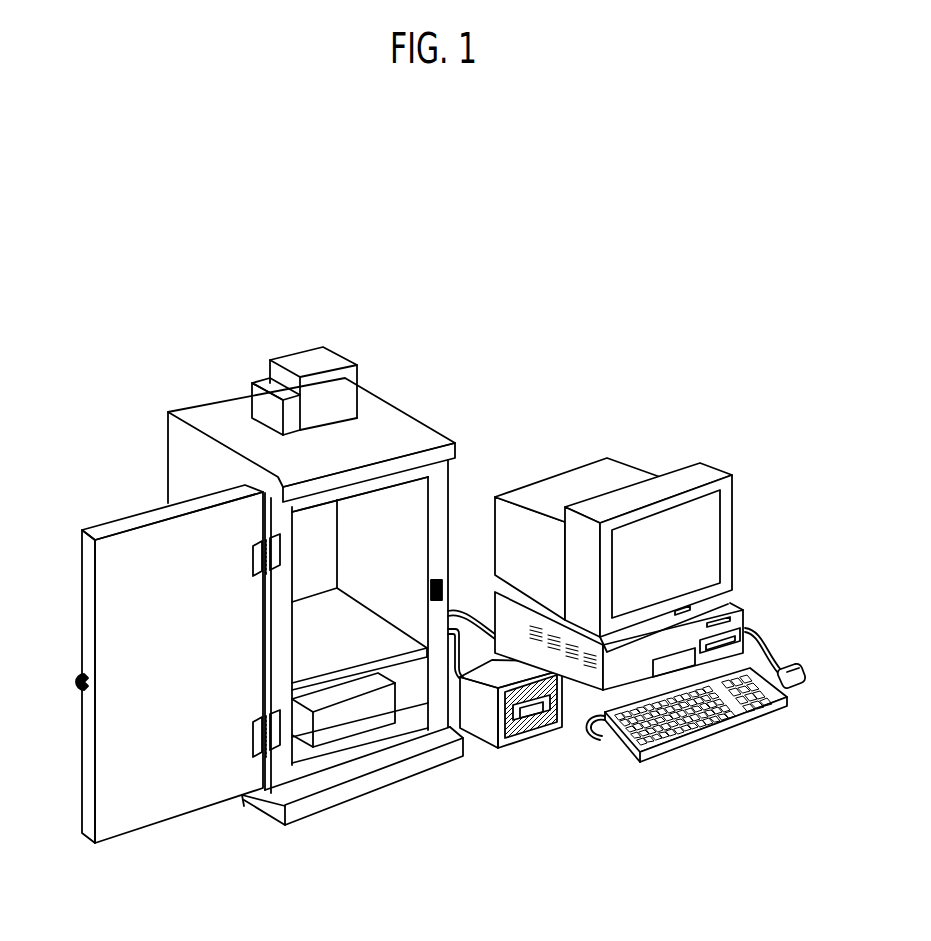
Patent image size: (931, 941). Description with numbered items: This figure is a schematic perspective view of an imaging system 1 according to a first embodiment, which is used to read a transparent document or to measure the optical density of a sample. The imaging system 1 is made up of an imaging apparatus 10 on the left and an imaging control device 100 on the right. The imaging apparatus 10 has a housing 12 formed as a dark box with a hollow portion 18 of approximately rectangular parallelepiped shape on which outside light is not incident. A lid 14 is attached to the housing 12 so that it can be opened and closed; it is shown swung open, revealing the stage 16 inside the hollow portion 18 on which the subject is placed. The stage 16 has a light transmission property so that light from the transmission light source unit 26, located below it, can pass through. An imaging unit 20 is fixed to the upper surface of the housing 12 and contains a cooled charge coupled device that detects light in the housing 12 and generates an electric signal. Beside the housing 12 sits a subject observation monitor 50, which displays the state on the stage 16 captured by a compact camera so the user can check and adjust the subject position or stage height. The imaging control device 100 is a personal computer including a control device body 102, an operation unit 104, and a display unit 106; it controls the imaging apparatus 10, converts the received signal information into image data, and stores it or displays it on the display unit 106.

The imaging system 1 is at (551, 291).
The imaging apparatus 10 is at (292, 336).
The housing 12 is at (206, 415).
The lid 14 is at (200, 803).
The stage 16 is at (400, 660).
The hollow portion 18 is at (417, 494).
The imaging unit 20 is at (365, 375).
The transmission light source unit 26 is at (342, 728).
The subject observation monitor 50 is at (530, 735).
The imaging control device 100 is at (654, 447).
The control device body 102 is at (730, 605).
The operation unit 104 is at (723, 727).
The display unit 106 is at (727, 516).